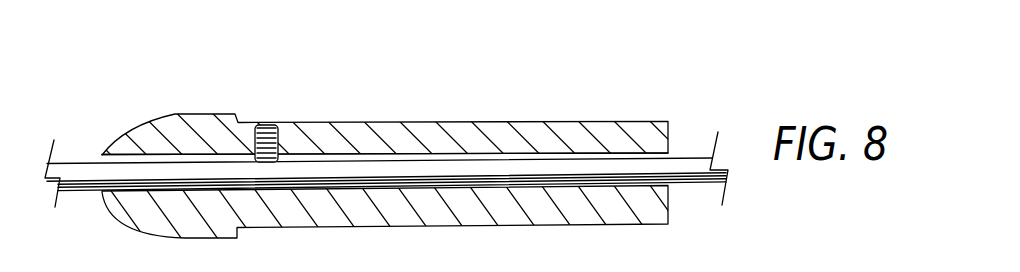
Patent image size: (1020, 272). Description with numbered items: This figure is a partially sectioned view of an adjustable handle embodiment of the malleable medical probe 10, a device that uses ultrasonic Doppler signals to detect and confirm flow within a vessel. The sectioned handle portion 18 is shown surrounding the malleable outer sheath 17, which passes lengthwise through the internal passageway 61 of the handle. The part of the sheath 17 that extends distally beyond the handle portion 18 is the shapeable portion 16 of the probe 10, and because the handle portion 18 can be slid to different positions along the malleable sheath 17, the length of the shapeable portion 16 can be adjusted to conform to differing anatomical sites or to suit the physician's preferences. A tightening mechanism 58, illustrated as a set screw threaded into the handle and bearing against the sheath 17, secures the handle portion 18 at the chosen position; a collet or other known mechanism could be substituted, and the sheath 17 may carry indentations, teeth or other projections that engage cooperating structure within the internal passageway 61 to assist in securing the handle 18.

The malleable medical probe 10 is at (501, 74).
The shapeable portion 16 is at (76, 161).
The outer sheath 17 is at (689, 158).
The handle portion 18 is at (427, 122).
The tightening mechanism 58 is at (262, 123).
The internal passageway 61 is at (314, 157).